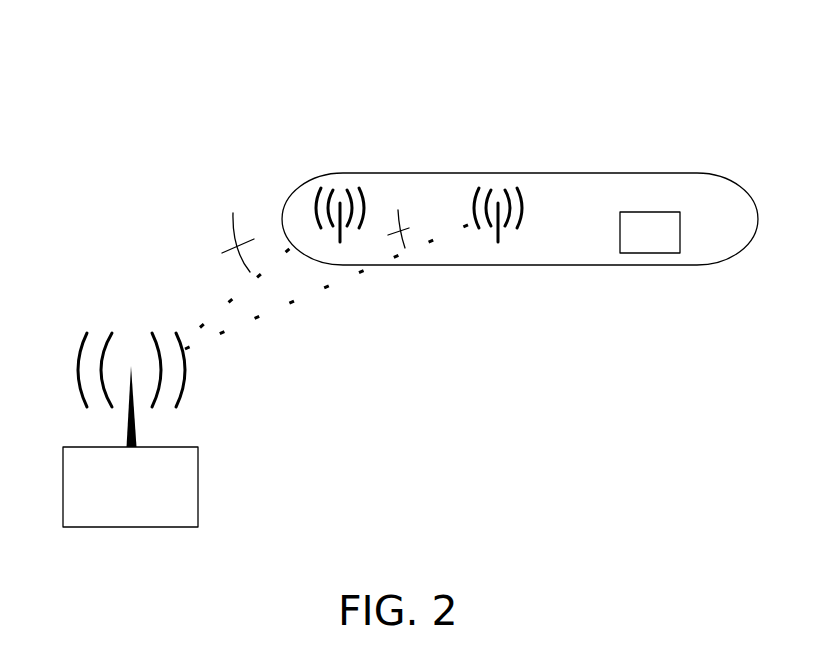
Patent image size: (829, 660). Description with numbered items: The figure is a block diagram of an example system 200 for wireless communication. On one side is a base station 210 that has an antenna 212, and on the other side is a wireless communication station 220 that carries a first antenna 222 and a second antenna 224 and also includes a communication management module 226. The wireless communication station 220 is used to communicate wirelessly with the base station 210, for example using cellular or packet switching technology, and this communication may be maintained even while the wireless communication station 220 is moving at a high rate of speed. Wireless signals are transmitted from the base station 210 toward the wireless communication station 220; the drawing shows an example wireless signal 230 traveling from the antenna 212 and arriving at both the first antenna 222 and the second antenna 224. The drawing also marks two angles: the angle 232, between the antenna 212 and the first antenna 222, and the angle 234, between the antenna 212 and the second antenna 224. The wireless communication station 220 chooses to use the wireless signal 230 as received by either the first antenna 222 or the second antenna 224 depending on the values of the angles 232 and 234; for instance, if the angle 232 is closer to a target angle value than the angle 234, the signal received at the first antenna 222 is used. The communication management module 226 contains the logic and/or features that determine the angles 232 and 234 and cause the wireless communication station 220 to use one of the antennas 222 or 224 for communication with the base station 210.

The system 200 is at (196, 90).
The base station 210 is at (113, 516).
The antenna 212 is at (130, 329).
The wireless communication station 220 is at (607, 206).
The first antenna 222 is at (349, 183).
The second antenna 224 is at (506, 181).
The communication management module 226 is at (669, 245).
The wireless signal 230 is at (292, 276).
The angle 232 is at (224, 201).
The angle 234 is at (388, 192).